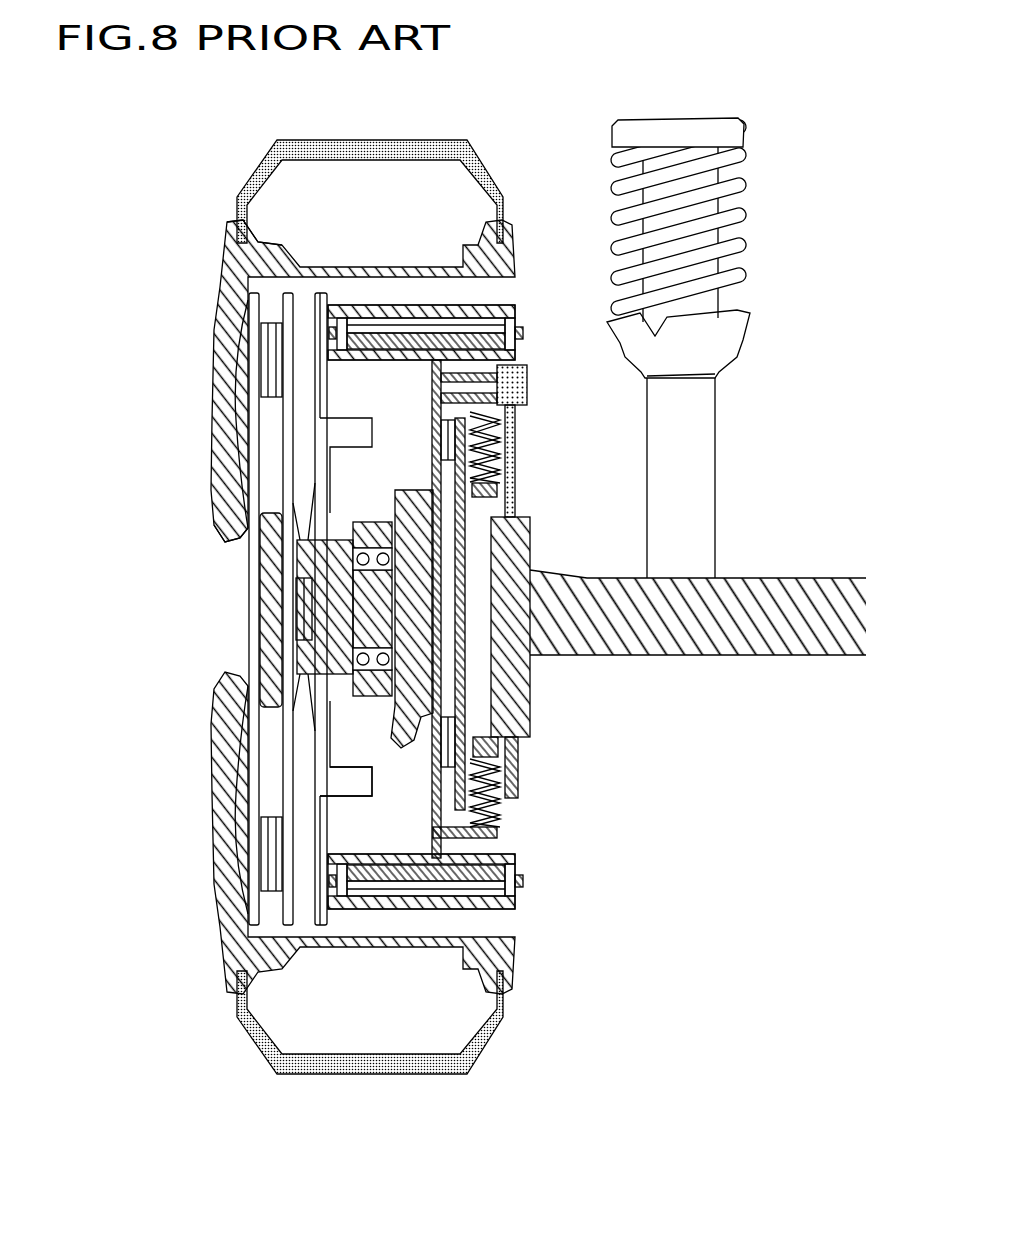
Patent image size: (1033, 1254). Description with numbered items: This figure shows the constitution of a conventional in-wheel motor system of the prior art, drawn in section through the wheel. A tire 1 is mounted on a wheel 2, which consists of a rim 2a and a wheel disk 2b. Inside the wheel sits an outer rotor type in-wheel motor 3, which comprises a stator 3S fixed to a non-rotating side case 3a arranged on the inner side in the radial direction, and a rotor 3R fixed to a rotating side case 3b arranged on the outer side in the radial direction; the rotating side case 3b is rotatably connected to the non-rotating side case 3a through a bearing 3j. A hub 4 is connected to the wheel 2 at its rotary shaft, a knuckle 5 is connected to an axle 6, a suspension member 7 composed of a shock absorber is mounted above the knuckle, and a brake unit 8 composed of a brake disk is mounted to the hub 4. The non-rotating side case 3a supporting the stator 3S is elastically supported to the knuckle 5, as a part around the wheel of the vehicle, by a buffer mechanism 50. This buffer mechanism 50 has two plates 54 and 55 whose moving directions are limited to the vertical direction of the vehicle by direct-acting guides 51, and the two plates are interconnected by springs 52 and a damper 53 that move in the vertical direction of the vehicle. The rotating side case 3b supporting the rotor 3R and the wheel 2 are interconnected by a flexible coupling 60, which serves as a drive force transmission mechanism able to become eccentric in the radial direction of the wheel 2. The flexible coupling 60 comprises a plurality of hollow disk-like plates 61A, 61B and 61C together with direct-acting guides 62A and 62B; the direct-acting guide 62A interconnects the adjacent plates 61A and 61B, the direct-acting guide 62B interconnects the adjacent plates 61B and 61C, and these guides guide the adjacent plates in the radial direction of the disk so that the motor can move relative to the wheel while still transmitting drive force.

The tire 1 is at (447, 130).
The wheel 2 is at (212, 468).
The rim 2a is at (243, 226).
The wheel disk 2b is at (213, 513).
The in-wheel motor 3 is at (459, 554).
The stator 3S is at (370, 337).
The rotor 3R is at (430, 318).
The non-rotating side case 3a is at (528, 385).
The rotating side case 3b is at (514, 314).
The bearing 3j is at (527, 332).
The hub 4 is at (292, 583).
The knuckle 5 is at (413, 732).
The axle 6 is at (762, 592).
The suspension member 7 is at (707, 285).
The brake unit 8 is at (342, 787).
The buffer mechanism 50 is at (504, 615).
The direct-acting guides 51 is at (430, 420).
The springs 52 is at (513, 465).
The damper 53 is at (525, 560).
The plate 54 is at (430, 448).
The plate 55 is at (470, 482).
The flexible coupling 60 is at (208, 583).
The plate 61A is at (323, 718).
The plate 61B is at (290, 440).
The plate 61C is at (252, 325).
The direct-acting guide 62A is at (285, 607).
The direct-acting guide 62B is at (254, 351).